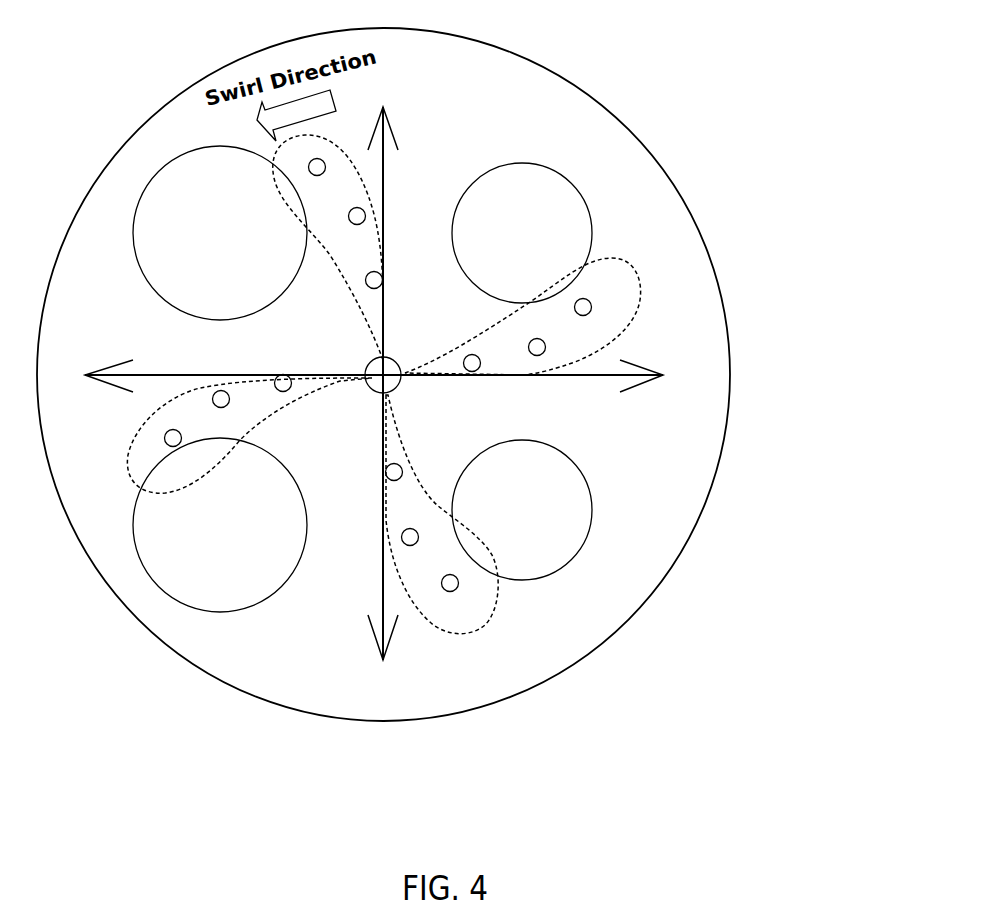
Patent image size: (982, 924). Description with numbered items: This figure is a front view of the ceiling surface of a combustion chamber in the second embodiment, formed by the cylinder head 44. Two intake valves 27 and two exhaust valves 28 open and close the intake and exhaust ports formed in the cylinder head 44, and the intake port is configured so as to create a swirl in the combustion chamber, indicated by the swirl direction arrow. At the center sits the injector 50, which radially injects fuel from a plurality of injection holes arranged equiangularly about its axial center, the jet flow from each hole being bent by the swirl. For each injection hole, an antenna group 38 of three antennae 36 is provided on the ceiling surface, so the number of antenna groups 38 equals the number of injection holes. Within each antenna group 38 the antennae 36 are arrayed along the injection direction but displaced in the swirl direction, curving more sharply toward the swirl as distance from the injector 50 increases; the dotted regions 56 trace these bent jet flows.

The intake valve 27 is at (167, 200).
The exhaust valve 28 is at (475, 190).
The antenna 36 is at (591, 303).
The antenna group 38 is at (773, 272).
The cylinder head 44 is at (677, 190).
The injector 50 is at (381, 388).
The fuel spray region 56 is at (613, 258).